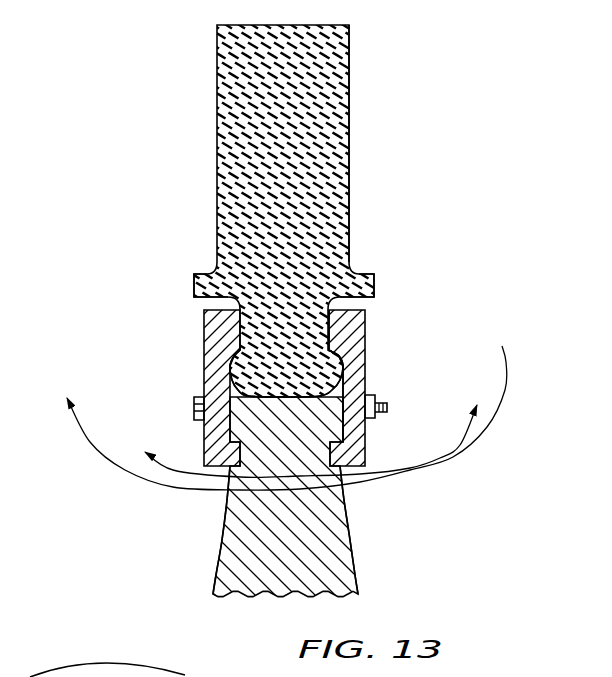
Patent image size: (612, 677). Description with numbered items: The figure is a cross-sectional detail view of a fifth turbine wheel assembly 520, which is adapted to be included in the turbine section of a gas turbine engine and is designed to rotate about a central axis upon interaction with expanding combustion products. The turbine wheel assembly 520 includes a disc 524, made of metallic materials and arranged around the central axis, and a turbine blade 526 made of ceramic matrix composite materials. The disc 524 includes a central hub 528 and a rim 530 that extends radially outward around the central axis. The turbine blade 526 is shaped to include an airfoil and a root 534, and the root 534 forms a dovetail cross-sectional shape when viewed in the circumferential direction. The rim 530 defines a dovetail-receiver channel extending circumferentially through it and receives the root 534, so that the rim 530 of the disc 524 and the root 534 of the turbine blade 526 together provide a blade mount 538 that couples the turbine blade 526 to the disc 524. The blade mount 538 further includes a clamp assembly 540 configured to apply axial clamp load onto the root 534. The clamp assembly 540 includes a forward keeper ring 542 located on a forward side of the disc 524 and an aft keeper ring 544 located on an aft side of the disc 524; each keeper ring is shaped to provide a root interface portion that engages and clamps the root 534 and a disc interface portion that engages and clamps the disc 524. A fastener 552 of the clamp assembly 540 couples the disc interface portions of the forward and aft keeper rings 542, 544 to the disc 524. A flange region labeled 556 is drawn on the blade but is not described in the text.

The fifth turbine wheel assembly 520 is at (185, 110).
The turbine blade 526 is at (412, 150).
The flange 556 is at (194, 283).
The root 534 is at (365, 338).
The rim 530 is at (366, 385).
The blade mount 538 is at (449, 336).
The clamp assembly 540 is at (494, 252).
The forward keeper ring 542 is at (204, 341).
The aft keeper ring 544 is at (367, 386).
The fastener 552 is at (194, 408).
The disc 524 is at (368, 537).
The central hub 528 is at (357, 557).